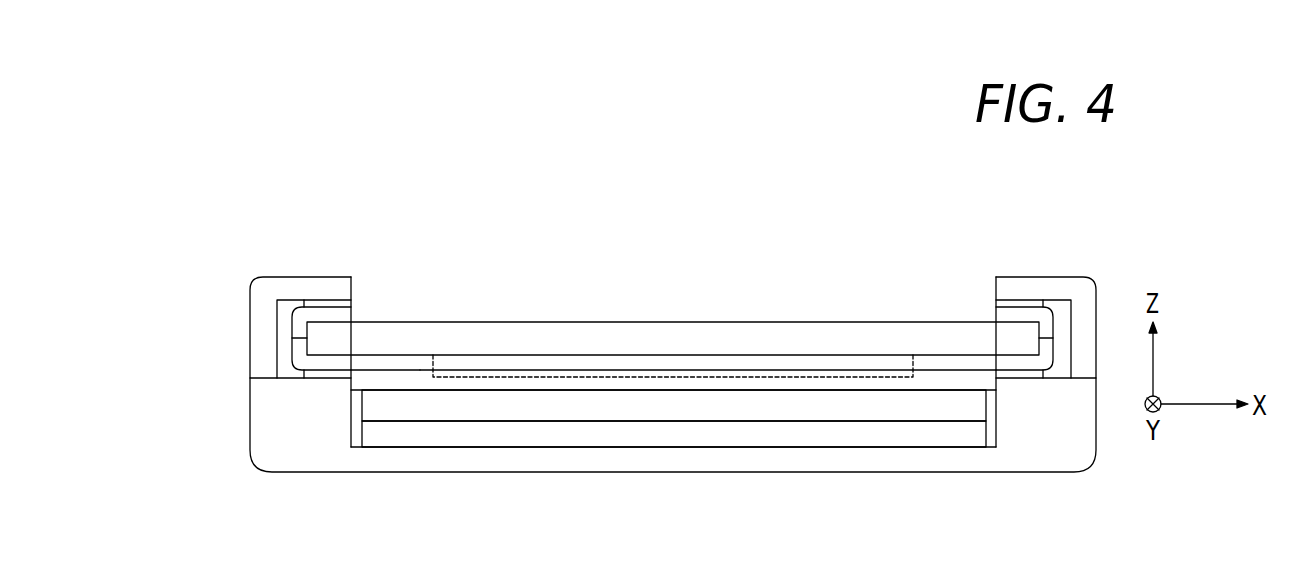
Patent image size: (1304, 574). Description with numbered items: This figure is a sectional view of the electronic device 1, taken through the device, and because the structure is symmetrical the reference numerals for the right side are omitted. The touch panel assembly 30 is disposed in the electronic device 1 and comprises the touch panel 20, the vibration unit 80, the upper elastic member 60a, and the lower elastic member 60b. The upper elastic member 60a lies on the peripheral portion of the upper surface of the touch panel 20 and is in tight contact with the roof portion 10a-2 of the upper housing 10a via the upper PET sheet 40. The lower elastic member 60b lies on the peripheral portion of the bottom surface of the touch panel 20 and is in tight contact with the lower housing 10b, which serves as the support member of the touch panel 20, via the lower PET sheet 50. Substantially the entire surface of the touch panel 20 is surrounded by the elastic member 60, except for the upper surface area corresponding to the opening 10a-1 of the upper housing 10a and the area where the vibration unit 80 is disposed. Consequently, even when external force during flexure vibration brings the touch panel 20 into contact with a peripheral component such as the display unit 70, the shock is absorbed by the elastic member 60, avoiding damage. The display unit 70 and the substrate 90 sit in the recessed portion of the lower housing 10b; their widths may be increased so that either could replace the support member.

The electronic device 1 is at (703, 183).
The upper housing 10a is at (257, 343).
The opening 10a-1 is at (753, 287).
The roof portion 10a-2 is at (297, 291).
The lower housing 10b is at (265, 430).
The touch panel 20 is at (610, 322).
The touch panel assembly 30 is at (637, 140).
The upper PET sheet 40 is at (327, 305).
The lower PET sheet 50 is at (327, 376).
The elastic member 60 is at (508, 187).
The upper elastic member 60a is at (347, 317).
The lower elastic member 60b is at (418, 362).
The display unit 70 is at (452, 405).
The vibration unit 80 is at (552, 365).
The substrate 90 is at (537, 430).